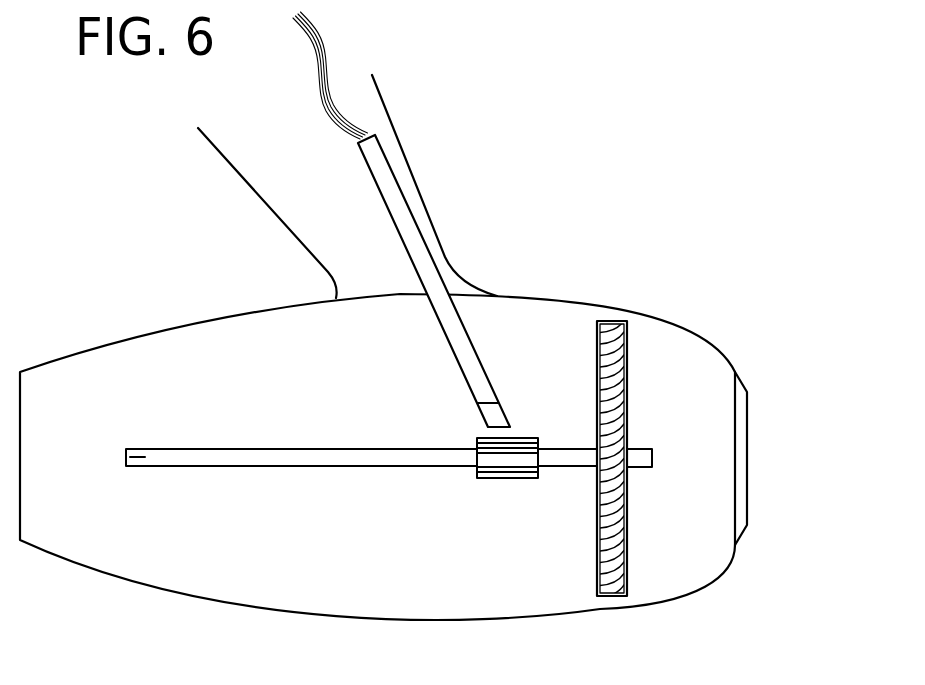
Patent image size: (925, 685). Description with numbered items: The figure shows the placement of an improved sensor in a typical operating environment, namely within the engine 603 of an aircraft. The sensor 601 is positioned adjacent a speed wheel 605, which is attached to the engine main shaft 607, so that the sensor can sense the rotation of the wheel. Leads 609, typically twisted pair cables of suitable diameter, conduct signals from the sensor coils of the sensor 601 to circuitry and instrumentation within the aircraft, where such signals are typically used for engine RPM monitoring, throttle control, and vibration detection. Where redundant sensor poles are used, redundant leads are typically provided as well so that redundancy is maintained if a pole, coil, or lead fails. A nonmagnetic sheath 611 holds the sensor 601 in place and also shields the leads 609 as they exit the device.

The sensor 601 is at (500, 414).
The engine 603 is at (612, 335).
The speed wheel 605 is at (532, 446).
The engine main shaft 607 is at (644, 450).
The leads 609 is at (327, 62).
The nonmagnetic sheath 611 is at (387, 178).